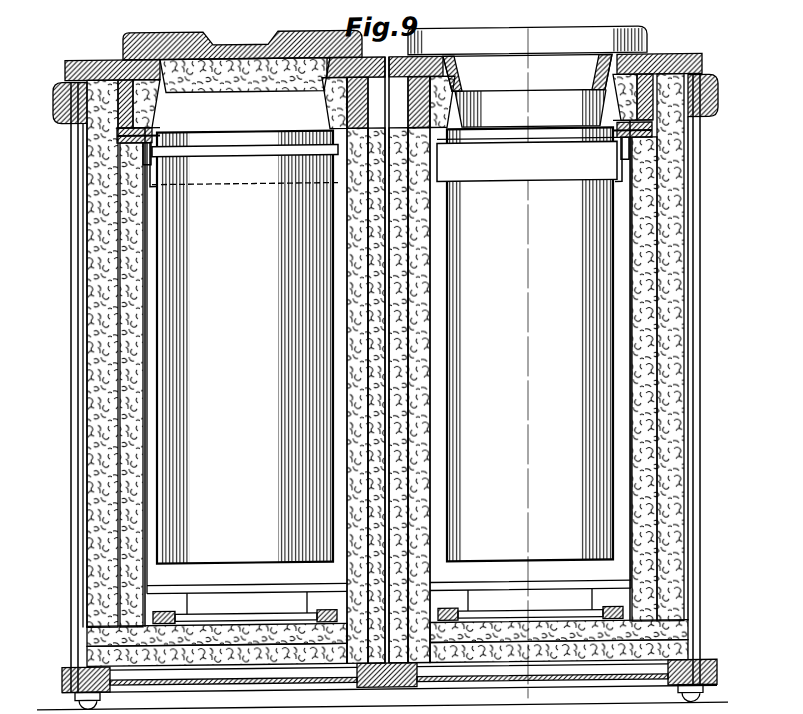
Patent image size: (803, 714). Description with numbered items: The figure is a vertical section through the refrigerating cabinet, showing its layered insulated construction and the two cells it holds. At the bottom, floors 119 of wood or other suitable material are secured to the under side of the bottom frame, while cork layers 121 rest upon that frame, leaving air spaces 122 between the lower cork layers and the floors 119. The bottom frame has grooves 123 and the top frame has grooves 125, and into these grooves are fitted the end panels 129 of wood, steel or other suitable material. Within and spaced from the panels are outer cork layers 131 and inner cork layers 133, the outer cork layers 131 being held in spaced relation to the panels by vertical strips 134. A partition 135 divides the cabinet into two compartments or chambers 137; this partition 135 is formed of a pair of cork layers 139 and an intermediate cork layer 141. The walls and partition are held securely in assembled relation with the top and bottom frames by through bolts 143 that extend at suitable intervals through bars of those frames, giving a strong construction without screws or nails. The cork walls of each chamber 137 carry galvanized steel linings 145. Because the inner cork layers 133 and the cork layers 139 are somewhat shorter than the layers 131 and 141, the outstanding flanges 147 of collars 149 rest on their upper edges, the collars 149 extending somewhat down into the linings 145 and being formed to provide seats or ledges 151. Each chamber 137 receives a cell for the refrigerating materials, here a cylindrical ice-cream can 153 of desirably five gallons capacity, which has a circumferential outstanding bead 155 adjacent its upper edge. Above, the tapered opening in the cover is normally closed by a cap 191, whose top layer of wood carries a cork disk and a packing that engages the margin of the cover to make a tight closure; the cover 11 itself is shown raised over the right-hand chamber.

The cover 11 is at (527, 79).
The cap 191 is at (385, 50).
The floors 119 is at (247, 681).
The cork layers 121 is at (100, 656).
The air spaces 122 is at (193, 671).
The grooves 123 is at (64, 669).
The grooves 125 is at (58, 118).
The end panels 129 is at (72, 370).
The outer cork layers 131 is at (105, 400).
The inner cork layers 133 is at (128, 420).
The vertical strips 134 is at (84, 452).
The partition 135 is at (422, 325).
The compartments or chambers 137 is at (146, 476).
The cork layers 139 is at (405, 350).
The intermediate cork layer 141 is at (400, 383).
The through bolts 143 is at (86, 507).
The galvanized steel linings 145 is at (146, 521).
The outstanding flanges 147 is at (138, 147).
The collars 149 is at (140, 163).
The retaining clip 151 is at (150, 182).
The ice-cream can 153 is at (389, 364).
The circumferential outstanding bead 155 is at (207, 145).